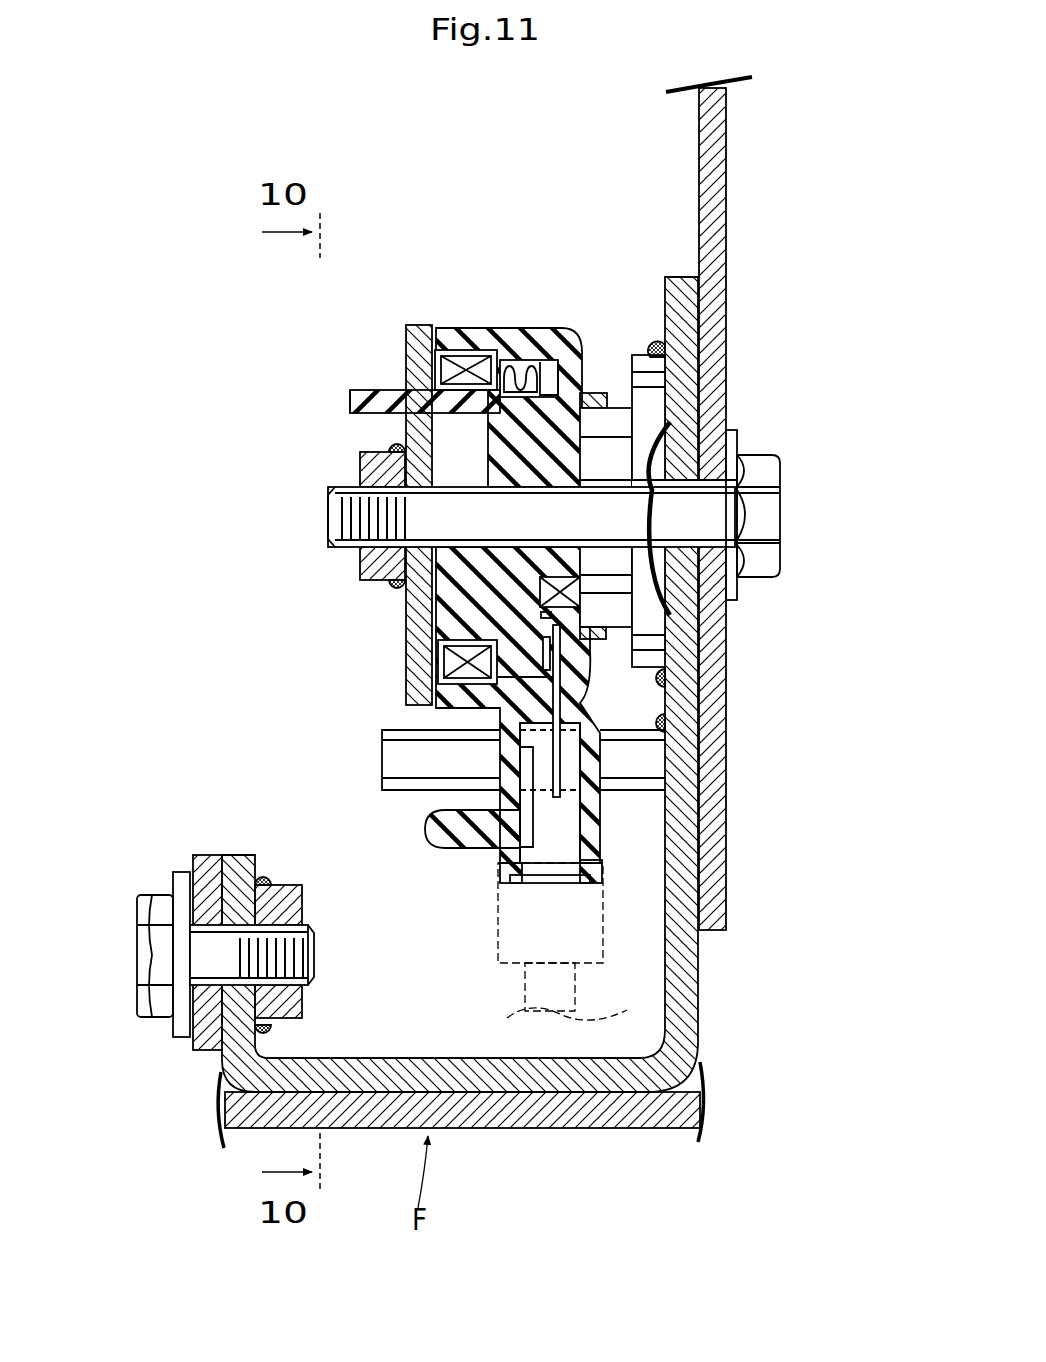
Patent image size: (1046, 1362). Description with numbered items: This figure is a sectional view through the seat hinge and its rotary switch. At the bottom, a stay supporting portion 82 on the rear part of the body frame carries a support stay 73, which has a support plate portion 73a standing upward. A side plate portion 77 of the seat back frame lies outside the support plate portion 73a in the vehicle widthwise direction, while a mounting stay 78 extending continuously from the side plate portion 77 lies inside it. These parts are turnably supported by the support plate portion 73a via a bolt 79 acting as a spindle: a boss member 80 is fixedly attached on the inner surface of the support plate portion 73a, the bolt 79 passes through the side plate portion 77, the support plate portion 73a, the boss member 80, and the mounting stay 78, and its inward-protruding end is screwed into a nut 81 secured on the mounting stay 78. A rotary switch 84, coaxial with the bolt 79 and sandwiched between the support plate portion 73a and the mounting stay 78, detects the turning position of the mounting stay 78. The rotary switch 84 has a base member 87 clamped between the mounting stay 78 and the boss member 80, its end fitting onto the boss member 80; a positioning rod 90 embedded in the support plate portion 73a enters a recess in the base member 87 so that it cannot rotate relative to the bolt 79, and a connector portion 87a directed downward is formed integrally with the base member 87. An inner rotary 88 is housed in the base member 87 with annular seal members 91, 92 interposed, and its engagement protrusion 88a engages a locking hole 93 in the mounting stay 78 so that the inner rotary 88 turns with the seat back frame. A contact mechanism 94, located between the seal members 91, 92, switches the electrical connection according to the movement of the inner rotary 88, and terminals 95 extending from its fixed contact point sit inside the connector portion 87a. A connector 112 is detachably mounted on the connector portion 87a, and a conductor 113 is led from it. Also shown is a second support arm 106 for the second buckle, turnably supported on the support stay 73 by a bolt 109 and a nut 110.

The side plate portion 77 is at (713, 240).
The support stay 73 is at (372, 1062).
The support plate portion 73a is at (669, 298).
The stay supporting portion 82 is at (506, 1130).
The second support arm 106 is at (202, 858).
The bolt 109 is at (158, 976).
The nut 110 is at (292, 905).
The positioning rod 90 is at (395, 755).
The mounting stay 78 is at (416, 335).
The rotary switch 84 is at (513, 556).
The base member 87 is at (552, 340).
The connector portion 87a is at (590, 800).
The terminals 95 is at (558, 797).
The annular seal member 91 is at (485, 368).
The inner rotary 88 is at (447, 632).
The contact mechanism 94 is at (530, 626).
The locking hole 93 is at (398, 398).
The engagement protrusion 88a is at (350, 402).
The annular seal member 92 is at (570, 404).
The boss member 80 is at (653, 400).
The nut 81 is at (362, 466).
The bolt 79 is at (330, 518).
The connector 112 is at (496, 935).
The conductor 113 is at (592, 992).